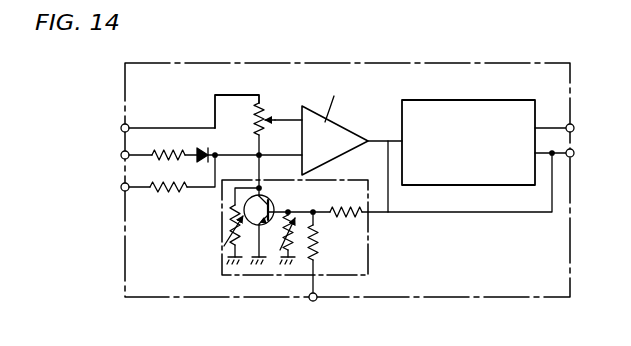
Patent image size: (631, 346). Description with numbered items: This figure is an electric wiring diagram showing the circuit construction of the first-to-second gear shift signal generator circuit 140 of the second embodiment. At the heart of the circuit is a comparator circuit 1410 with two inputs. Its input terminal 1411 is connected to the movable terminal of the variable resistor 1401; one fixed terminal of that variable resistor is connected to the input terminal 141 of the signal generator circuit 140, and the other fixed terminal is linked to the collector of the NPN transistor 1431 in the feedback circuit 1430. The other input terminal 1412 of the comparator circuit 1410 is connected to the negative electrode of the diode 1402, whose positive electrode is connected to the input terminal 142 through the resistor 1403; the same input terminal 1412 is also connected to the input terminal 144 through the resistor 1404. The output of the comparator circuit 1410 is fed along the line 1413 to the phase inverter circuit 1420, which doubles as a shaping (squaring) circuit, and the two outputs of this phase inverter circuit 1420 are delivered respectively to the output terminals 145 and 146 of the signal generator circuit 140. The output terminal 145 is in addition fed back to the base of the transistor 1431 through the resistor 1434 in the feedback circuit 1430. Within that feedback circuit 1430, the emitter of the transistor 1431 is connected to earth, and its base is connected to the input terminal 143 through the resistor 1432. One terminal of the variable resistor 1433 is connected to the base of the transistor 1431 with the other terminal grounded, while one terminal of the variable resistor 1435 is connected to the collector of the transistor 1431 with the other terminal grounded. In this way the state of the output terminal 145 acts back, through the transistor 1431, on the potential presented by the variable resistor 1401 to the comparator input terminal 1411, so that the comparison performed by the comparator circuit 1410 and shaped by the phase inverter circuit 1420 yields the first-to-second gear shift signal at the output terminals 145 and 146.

The first-to-second gear shift signal generator circuit 140 is at (348, 62).
The input terminal 141 is at (121, 128).
The input terminal 142 is at (121, 155).
The input terminal 143 is at (314, 302).
The input terminal 144 is at (121, 187).
The output terminal 145 is at (574, 155).
The output terminal 146 is at (574, 126).
The variable resistor 1401 is at (254, 116).
The diode 1402 is at (205, 164).
The resistor 1403 is at (160, 152).
The resistor 1404 is at (158, 191).
The comparator circuit 1410 is at (318, 165).
The input terminal 1411 is at (272, 118).
The input terminal 1412 is at (288, 153).
The feedback line 1413 is at (388, 212).
The phase inverter circuit 1420 is at (440, 100).
The feedback circuit 1430 is at (368, 268).
The transistor 1431 is at (247, 220).
The resistor 1432 is at (316, 250).
The variable resistor 1433 is at (282, 250).
The resistor 1434 is at (353, 214).
The variable resistor 1435 is at (230, 238).